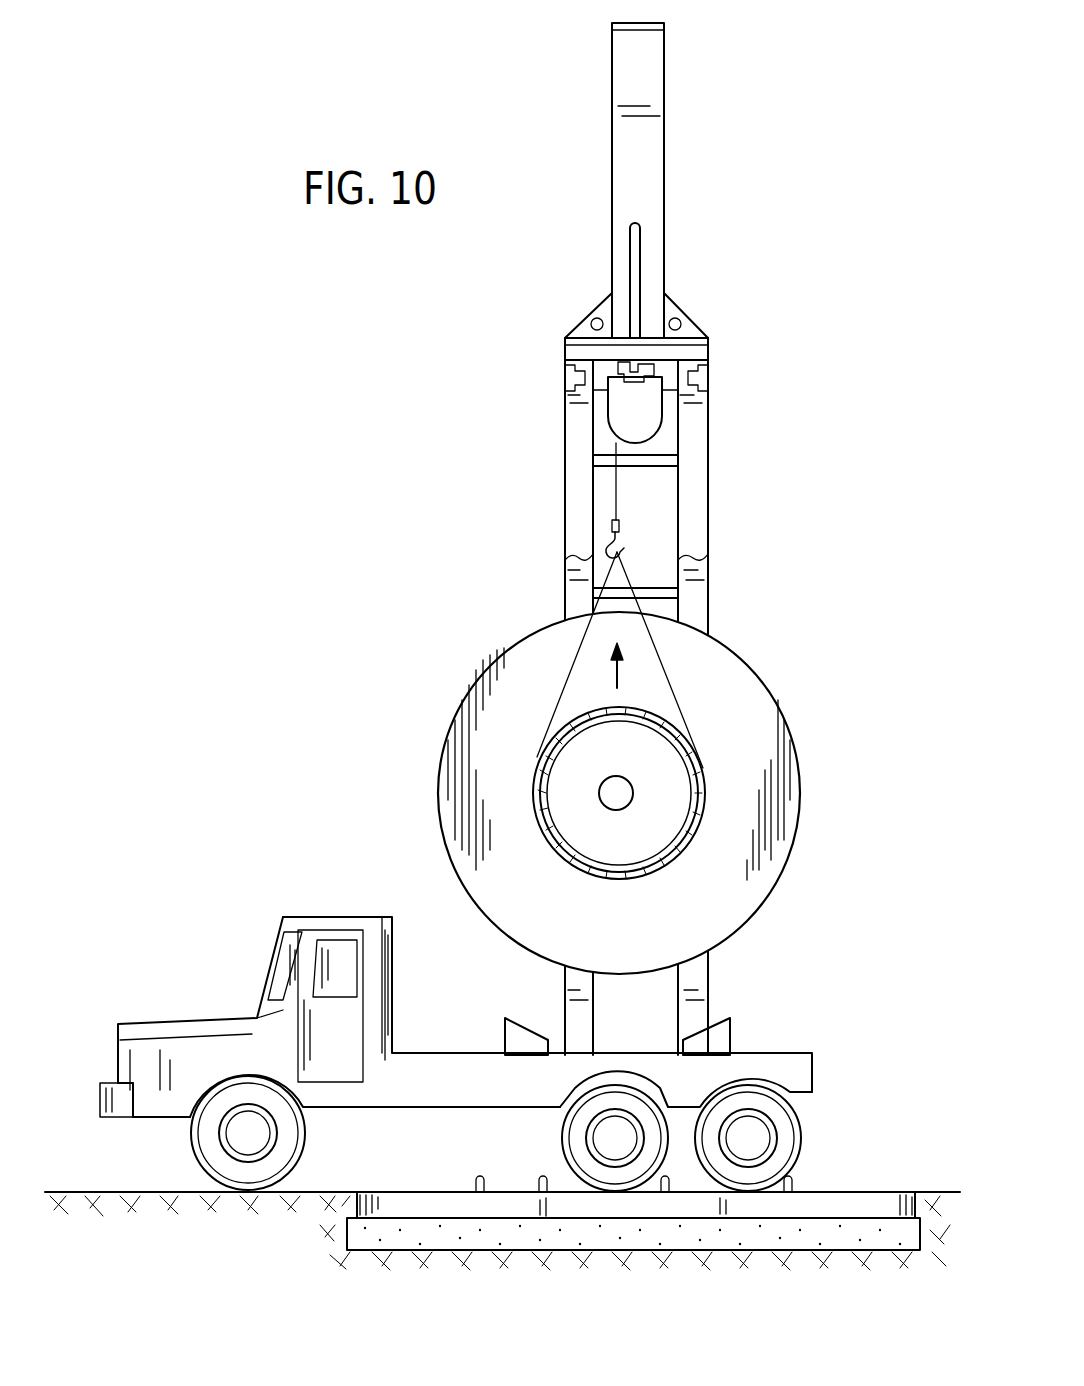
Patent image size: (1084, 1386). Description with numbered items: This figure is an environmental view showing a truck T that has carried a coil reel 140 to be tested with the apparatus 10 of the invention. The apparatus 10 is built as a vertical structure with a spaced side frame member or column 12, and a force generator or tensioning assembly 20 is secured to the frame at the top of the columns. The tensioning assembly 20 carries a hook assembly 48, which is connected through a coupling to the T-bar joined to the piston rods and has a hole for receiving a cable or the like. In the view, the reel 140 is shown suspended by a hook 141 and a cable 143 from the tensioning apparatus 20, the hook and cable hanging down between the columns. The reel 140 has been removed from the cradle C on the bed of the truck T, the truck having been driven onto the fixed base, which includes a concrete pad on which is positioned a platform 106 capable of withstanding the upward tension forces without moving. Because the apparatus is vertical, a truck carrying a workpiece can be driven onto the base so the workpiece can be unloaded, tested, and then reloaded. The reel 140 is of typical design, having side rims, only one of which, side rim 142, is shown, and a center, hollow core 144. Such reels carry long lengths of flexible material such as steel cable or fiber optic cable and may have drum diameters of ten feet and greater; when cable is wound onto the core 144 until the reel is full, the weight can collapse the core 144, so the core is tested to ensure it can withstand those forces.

The apparatus 10 is at (733, 237).
The side frame member 12 is at (735, 485).
The tensioning assembly 20 is at (677, 117).
The hook assembly 48 is at (645, 417).
The platform 106 is at (838, 1181).
The reel 140 is at (757, 677).
The hook 141 is at (612, 537).
The side rim 142 is at (757, 813).
The cable 143 is at (614, 486).
The core 144 is at (676, 851).
The truck T is at (187, 996).
The cradle C is at (714, 1009).